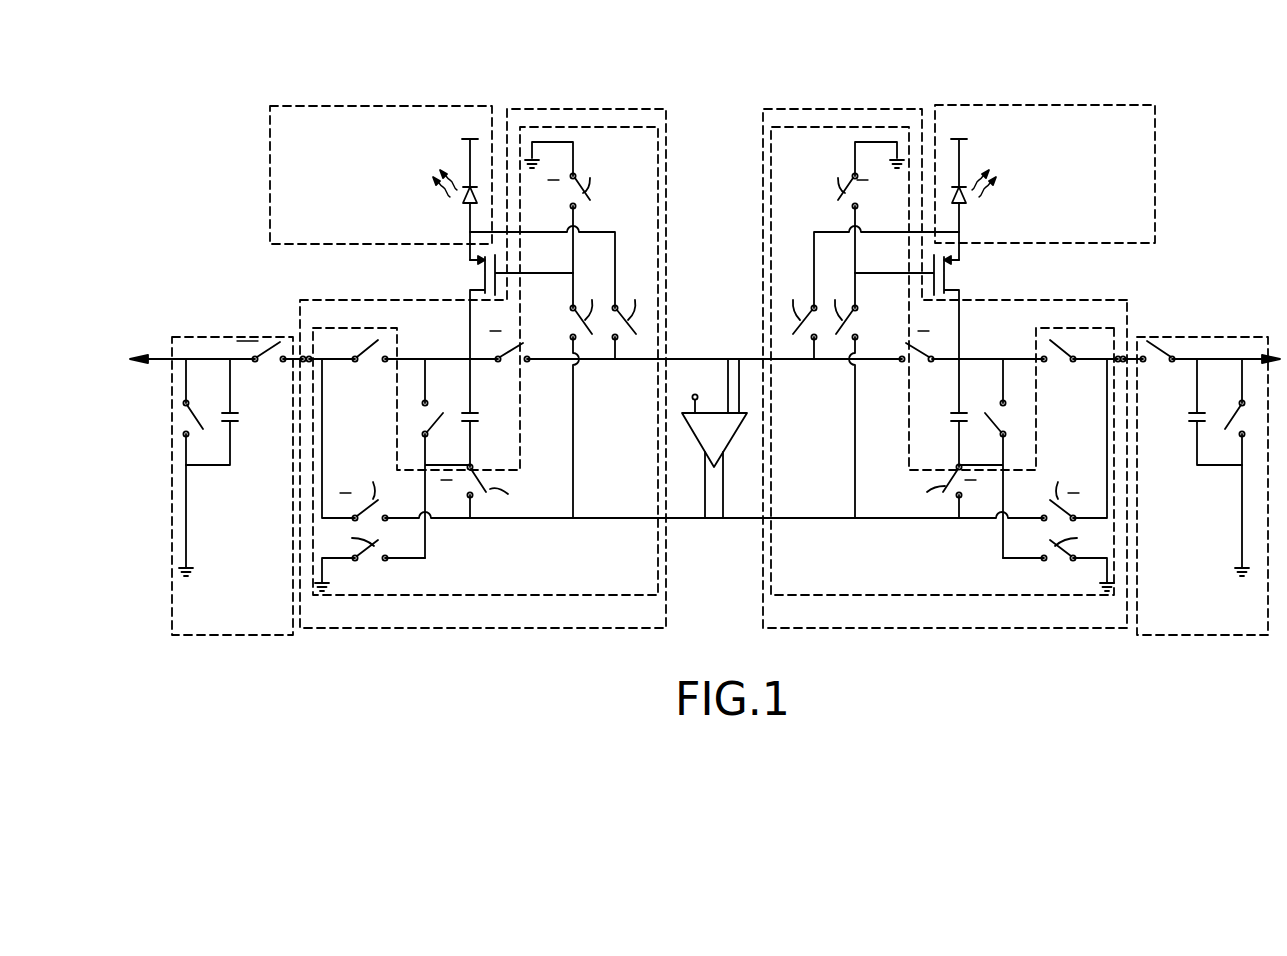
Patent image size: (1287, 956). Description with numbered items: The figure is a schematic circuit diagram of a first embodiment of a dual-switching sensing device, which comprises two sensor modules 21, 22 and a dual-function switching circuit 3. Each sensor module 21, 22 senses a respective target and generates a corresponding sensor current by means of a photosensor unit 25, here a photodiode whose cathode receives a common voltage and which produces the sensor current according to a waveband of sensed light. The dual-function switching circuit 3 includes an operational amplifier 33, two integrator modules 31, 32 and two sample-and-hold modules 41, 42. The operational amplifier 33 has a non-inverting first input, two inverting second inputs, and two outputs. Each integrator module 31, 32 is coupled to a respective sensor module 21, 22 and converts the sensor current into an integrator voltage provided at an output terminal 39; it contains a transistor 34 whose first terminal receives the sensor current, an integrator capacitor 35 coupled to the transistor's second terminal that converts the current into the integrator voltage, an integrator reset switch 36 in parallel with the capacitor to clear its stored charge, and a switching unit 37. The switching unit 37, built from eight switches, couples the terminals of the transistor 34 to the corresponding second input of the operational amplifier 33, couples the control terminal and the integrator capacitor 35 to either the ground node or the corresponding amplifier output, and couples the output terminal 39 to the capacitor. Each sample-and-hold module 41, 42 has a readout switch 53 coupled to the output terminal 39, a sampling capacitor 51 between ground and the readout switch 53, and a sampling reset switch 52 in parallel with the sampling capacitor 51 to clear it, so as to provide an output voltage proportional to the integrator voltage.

The dual-function switching circuit 3 is at (717, 110).
The sensor module 21 is at (392, 106).
The sensor module 22 is at (1008, 106).
The photosensor unit 25 is at (414, 187).
The integrator module 31 is at (565, 109).
The integrator module 32 is at (843, 109).
The operational amplifier 33 is at (714, 470).
The transistor 34 is at (482, 266).
The integrator capacitor 35 is at (473, 425).
The integrator reset switch 36 is at (440, 414).
The switching unit 37 is at (447, 594).
The output terminal 39 is at (304, 355).
The sample-and-hold module 41 is at (220, 333).
The sample-and-hold module 42 is at (1213, 334).
The sampling capacitor 51 is at (236, 411).
The sampling reset switch 52 is at (714, 467).
The readout switch 53 is at (262, 336).